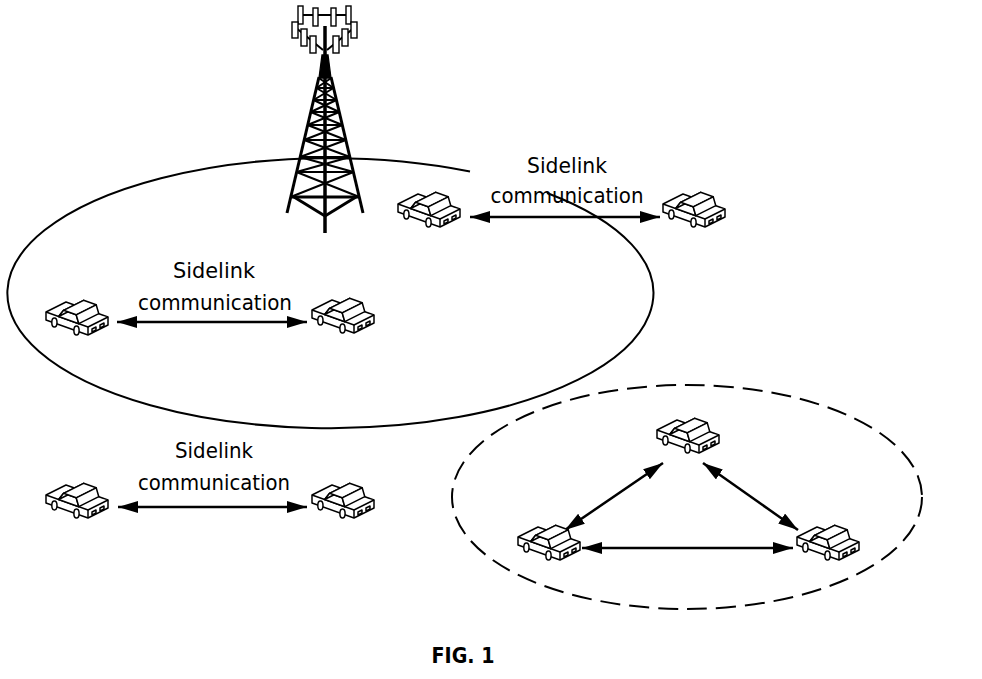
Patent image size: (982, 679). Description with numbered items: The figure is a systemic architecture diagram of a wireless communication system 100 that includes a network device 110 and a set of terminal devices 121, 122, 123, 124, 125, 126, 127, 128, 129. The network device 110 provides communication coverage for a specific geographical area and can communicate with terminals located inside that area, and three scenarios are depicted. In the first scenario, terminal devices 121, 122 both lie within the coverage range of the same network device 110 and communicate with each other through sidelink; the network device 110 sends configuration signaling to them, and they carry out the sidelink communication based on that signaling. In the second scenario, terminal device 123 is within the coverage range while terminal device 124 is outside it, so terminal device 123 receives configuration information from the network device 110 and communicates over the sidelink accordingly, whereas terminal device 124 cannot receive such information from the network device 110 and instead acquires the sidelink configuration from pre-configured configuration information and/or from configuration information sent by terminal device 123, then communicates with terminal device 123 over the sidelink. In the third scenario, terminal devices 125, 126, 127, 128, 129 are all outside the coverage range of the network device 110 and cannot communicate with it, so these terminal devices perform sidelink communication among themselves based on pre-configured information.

The wireless communication system 100 is at (464, 331).
The network device 110 is at (307, 131).
The terminal device 121 is at (77, 303).
The terminal device 122 is at (343, 303).
The terminal device 123 is at (429, 231).
The terminal device 124 is at (697, 231).
The terminal device 125 is at (77, 488).
The terminal device 126 is at (343, 489).
The terminal device 127 is at (688, 423).
The terminal device 128 is at (543, 529).
The terminal device 129 is at (833, 534).